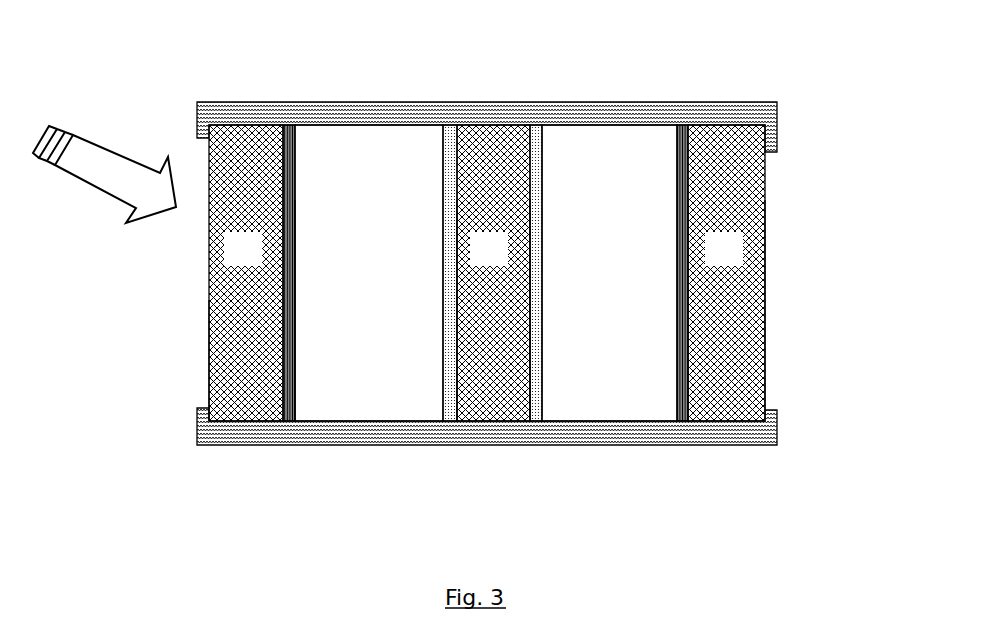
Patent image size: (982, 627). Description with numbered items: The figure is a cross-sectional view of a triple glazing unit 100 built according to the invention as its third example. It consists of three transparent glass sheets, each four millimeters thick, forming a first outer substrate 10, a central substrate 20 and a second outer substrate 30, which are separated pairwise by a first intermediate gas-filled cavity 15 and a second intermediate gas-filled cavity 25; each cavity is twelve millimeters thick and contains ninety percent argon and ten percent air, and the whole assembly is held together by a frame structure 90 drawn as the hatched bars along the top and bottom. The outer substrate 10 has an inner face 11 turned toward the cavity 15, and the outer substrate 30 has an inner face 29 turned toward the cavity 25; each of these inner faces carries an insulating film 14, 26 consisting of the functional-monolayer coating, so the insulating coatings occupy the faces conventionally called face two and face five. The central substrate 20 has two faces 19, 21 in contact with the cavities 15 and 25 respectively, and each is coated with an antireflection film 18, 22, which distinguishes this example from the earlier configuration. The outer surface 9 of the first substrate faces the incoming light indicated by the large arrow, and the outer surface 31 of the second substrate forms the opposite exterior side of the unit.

The optoelectronic device 100 is at (483, 260).
The frame structure 90 is at (367, 113).
The light incidence surface 9 is at (208, 375).
The substrate 10 is at (258, 263).
The inner face 11 is at (295, 333).
The insulating film 14 is at (288, 421).
The intermediate gas-filled cavity 15 is at (369, 263).
The antireflection film 18 is at (447, 421).
The face 19 is at (455, 378).
The substrate 20 is at (504, 263).
The face 21 is at (532, 332).
The antireflection film 22 is at (533, 410).
The intermediate gas-filled cavity 25 is at (615, 263).
The insulating film 26 is at (680, 421).
The inner face 29 is at (683, 370).
The substrate 30 is at (739, 263).
The outer surface 31 is at (765, 332).